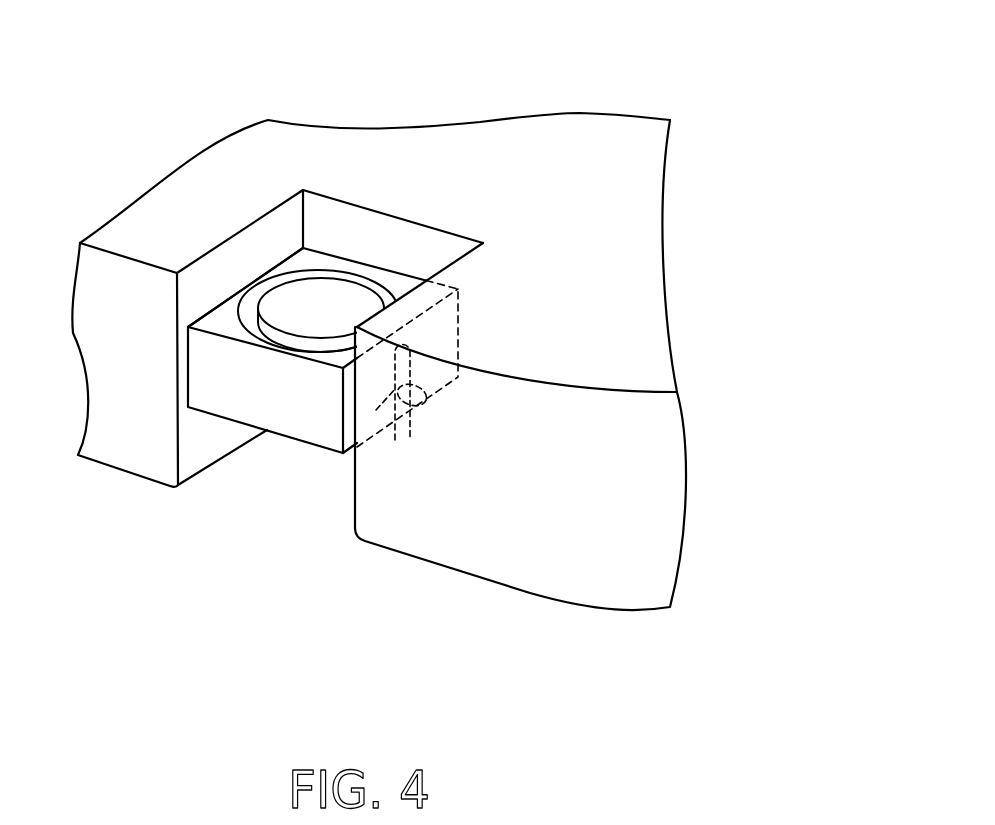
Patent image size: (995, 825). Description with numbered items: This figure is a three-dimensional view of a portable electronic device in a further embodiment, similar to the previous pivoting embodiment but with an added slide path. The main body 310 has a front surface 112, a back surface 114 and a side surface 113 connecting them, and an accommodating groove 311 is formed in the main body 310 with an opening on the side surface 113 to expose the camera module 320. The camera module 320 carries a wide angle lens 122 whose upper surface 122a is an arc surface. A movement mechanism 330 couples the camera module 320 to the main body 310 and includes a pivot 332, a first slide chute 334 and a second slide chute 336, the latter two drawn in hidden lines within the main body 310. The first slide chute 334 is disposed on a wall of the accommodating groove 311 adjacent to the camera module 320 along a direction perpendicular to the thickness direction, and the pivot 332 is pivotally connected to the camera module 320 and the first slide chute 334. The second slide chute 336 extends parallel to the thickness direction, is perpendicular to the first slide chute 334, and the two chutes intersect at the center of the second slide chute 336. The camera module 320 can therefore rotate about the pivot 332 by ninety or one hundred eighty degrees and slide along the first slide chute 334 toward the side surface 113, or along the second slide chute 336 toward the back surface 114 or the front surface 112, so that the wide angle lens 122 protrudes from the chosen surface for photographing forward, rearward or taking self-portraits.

The main body 310 is at (600, 98).
The accommodating groove 311 is at (238, 261).
The front surface 112 is at (132, 470).
The side surface 113 is at (598, 523).
The back surface 114 is at (602, 297).
The wide angle lens 122 is at (348, 305).
The upper surface 122a is at (323, 305).
The camera module 320 is at (300, 448).
The movement mechanism 330 is at (425, 528).
The pivot 332 is at (418, 392).
The first slide chute 334 is at (373, 403).
The second slide chute 336 is at (403, 433).